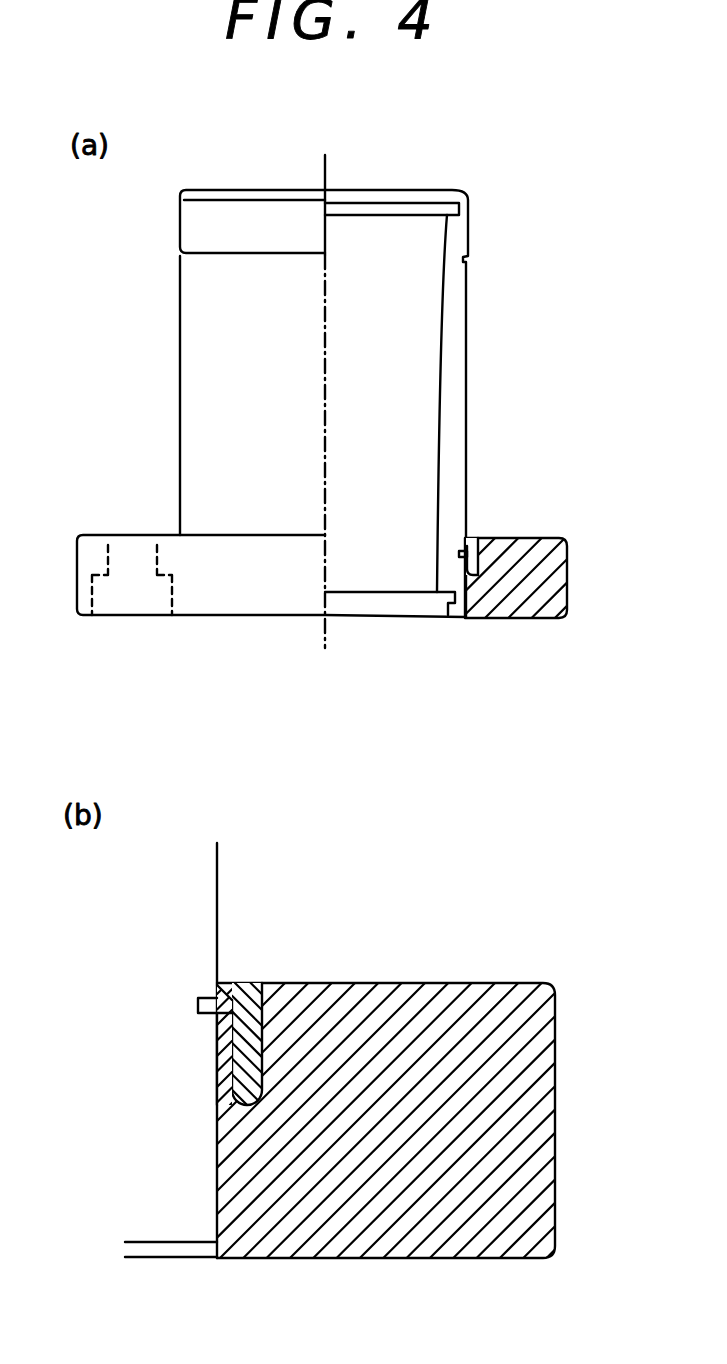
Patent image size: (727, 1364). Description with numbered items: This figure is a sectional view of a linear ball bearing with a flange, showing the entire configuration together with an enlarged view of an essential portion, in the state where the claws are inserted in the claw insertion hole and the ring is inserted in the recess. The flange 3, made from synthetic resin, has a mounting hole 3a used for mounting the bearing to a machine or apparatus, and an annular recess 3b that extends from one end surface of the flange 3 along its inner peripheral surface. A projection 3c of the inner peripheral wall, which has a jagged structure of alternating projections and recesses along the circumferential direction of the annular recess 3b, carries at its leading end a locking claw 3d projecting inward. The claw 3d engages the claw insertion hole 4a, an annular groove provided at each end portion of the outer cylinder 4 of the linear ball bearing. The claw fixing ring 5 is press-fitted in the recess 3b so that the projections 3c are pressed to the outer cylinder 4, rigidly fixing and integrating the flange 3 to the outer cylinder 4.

The flange 3 is at (558, 583).
The mounting hole 3a is at (134, 602).
The annular recess 3b is at (318, 984).
The projection of inner peripheral wall 3c is at (228, 1072).
The claw 3d is at (200, 1017).
The outer cylinder 4 is at (197, 383).
The claw insertion hole 4a is at (460, 553).
The claw fixing ring 5 is at (246, 993).